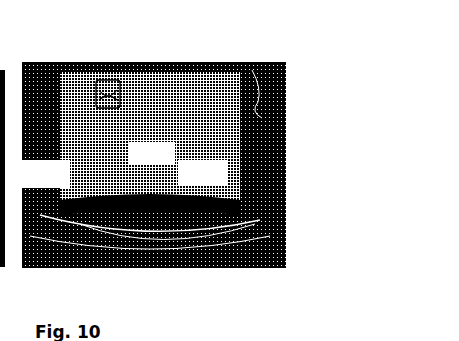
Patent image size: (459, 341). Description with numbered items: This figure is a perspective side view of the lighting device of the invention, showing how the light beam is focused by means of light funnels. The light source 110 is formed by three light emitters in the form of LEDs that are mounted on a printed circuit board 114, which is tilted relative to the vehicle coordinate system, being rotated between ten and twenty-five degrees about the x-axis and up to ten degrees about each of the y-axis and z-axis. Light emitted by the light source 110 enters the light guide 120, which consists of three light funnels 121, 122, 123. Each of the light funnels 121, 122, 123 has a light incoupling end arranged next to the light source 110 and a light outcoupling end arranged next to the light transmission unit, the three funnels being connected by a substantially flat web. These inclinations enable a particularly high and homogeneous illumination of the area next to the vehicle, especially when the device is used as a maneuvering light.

The light source 110 is at (147, 56).
The printed circuit board 114 is at (163, 108).
The light guide 120 is at (236, 160).
The light funnel 121 is at (46, 174).
The light funnel 122 is at (151, 153).
The light funnel 123 is at (202, 172).